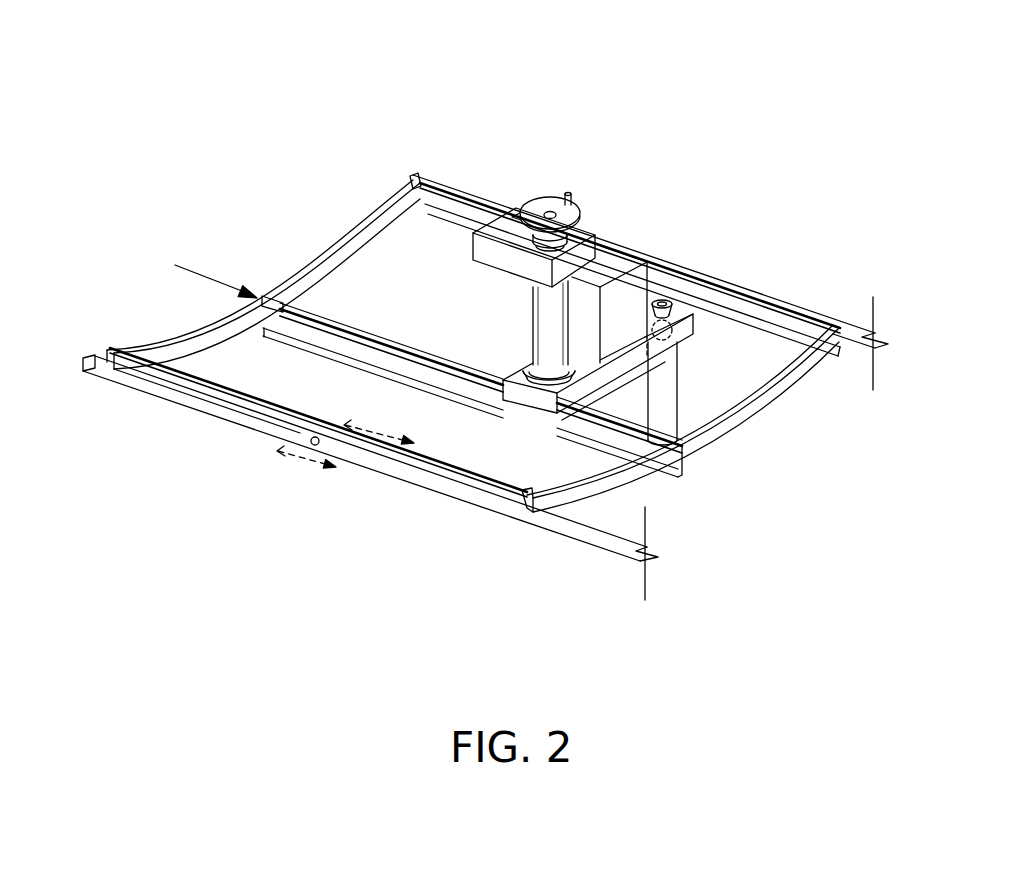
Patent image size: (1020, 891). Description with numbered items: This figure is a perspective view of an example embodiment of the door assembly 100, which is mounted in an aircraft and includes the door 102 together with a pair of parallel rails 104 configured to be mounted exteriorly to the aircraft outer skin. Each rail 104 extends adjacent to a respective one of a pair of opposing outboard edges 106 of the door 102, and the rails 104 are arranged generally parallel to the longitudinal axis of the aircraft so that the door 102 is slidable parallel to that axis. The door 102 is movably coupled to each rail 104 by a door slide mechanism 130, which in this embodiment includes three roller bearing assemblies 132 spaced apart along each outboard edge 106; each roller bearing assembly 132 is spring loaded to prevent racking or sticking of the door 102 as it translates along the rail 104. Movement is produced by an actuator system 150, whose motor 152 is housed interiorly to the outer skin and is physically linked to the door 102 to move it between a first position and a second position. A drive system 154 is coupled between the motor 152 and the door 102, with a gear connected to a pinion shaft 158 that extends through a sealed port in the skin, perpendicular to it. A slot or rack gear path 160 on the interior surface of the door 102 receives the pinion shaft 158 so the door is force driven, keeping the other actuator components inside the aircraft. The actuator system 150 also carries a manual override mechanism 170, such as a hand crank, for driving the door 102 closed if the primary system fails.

The door assembly 100 is at (656, 84).
The door 102 is at (377, 280).
The rail 104 is at (850, 327).
The outboard edge 106 is at (150, 350).
The door slide mechanism 130 is at (418, 158).
The roller bearing assembly 132 is at (445, 336).
The actuator system 150 is at (667, 222).
The motor 152 is at (632, 283).
The drive system 154 is at (650, 477).
The pinion shaft 158 is at (658, 380).
The rack gear path 160 is at (283, 292).
The manual override mechanism 170 is at (551, 163).